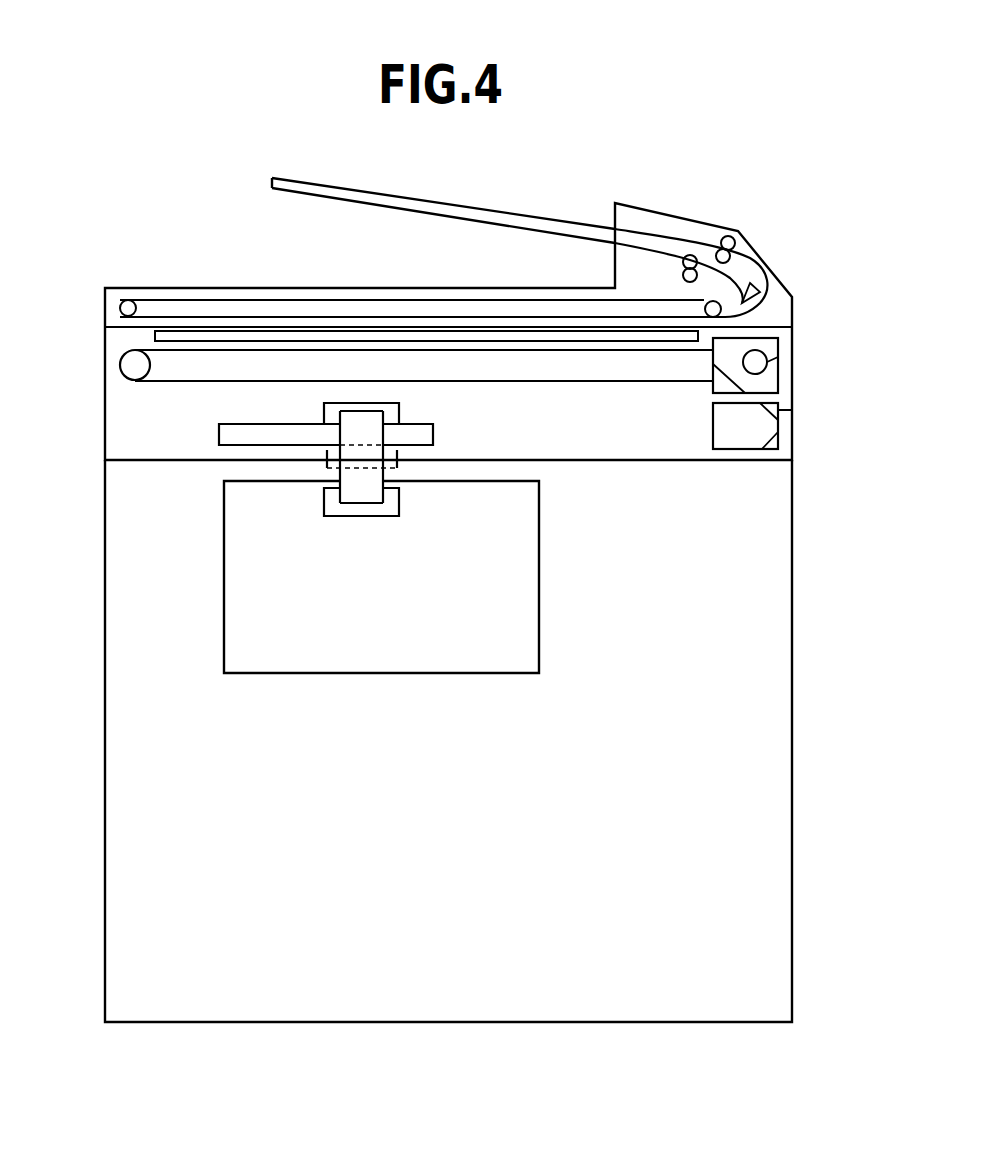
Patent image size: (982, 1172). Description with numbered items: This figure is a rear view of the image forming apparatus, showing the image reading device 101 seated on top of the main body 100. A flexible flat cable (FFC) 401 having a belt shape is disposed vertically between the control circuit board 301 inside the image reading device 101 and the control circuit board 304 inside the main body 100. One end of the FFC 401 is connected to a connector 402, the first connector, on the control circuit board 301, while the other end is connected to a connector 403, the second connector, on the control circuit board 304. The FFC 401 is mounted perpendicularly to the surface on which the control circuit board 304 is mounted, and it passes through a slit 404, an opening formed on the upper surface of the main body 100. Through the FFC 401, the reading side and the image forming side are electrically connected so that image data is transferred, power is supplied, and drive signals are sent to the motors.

The main body 100 is at (812, 464).
The image reading device 101 is at (812, 238).
The control circuit board 301 is at (233, 424).
The control circuit board 304 is at (395, 673).
The flexible flat cable 401 is at (385, 485).
The connector 402 is at (342, 402).
The connector 403 is at (367, 517).
The slit 404 is at (327, 463).